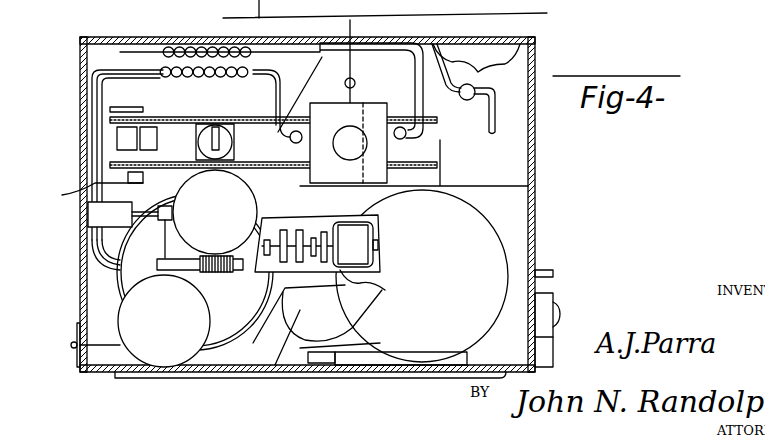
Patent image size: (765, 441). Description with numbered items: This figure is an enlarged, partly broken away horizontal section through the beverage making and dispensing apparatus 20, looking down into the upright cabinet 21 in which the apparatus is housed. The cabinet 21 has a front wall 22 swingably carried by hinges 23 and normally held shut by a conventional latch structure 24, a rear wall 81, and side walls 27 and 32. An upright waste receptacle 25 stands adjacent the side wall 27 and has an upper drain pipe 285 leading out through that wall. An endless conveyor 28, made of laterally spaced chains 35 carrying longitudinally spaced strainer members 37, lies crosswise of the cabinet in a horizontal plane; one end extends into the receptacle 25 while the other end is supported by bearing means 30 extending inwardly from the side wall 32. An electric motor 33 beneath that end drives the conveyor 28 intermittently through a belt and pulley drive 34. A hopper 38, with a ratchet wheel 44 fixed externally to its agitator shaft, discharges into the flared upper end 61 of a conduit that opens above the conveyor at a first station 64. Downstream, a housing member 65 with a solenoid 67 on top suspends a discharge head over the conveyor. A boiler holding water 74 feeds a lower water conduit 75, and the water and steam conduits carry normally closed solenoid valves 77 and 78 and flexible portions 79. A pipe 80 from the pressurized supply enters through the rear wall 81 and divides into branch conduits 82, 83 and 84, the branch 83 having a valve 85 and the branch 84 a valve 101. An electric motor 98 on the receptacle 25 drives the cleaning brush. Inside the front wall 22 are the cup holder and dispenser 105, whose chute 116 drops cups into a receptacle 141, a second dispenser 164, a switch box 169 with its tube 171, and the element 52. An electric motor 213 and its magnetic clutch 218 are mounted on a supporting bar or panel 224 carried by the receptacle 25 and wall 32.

The beverage making and dispensing apparatus 20 is at (112, 282).
The upright cabinet 21 is at (538, 82).
The front wall 22 is at (268, 377).
The hinges 23 is at (75, 349).
The latch structure 24 is at (556, 334).
The waste receptacle 25 is at (510, 160).
The cabinet side wall 27 is at (537, 217).
The endless conveyor 28 is at (161, 118).
The bearing means 30 is at (124, 103).
The side wall 32 is at (90, 211).
The electric motor 33 is at (157, 141).
The belt and pulley drive 34 is at (143, 174).
The chains 35 is at (246, 140).
The strainer members 37 is at (240, 133).
The hopper 38 is at (255, 211).
The ratchet wheel 44 is at (228, 264).
The conduit 52 is at (102, 223).
The flared upper end of conduit 61 is at (215, 127).
The first station 64 is at (233, 112).
The housing member 65 is at (355, 124).
The solenoid 67 is at (360, 152).
The water 74 is at (102, 100).
The lower water conduit 75 is at (120, 52).
The solenoid actuated valve 77 is at (408, 137).
The solenoid actuated valve 78 is at (286, 146).
The flexible portions 79 is at (206, 68).
The pipe 80 is at (358, 30).
The rear wall 81 is at (155, 38).
The branch conduit 82 is at (298, 94).
The branch conduit 83 is at (347, 70).
The branch conduit 84 is at (452, 31).
The solenoid actuated valve 85 is at (356, 83).
The electric motor 98 is at (474, 50).
The solenoid actuated valve 101 is at (473, 90).
The holder and dispenser 105 is at (513, 258).
The chute 116 is at (330, 318).
The receptacle 141 is at (335, 363).
The dispenser 164 is at (170, 352).
The box 169 is at (400, 395).
The tube 171 is at (427, 395).
The electric motor 213 is at (353, 236).
The magnetic clutch 218 is at (360, 278).
The supporting bar or panel 224 is at (315, 222).
The upper drain pipe 285 is at (554, 275).